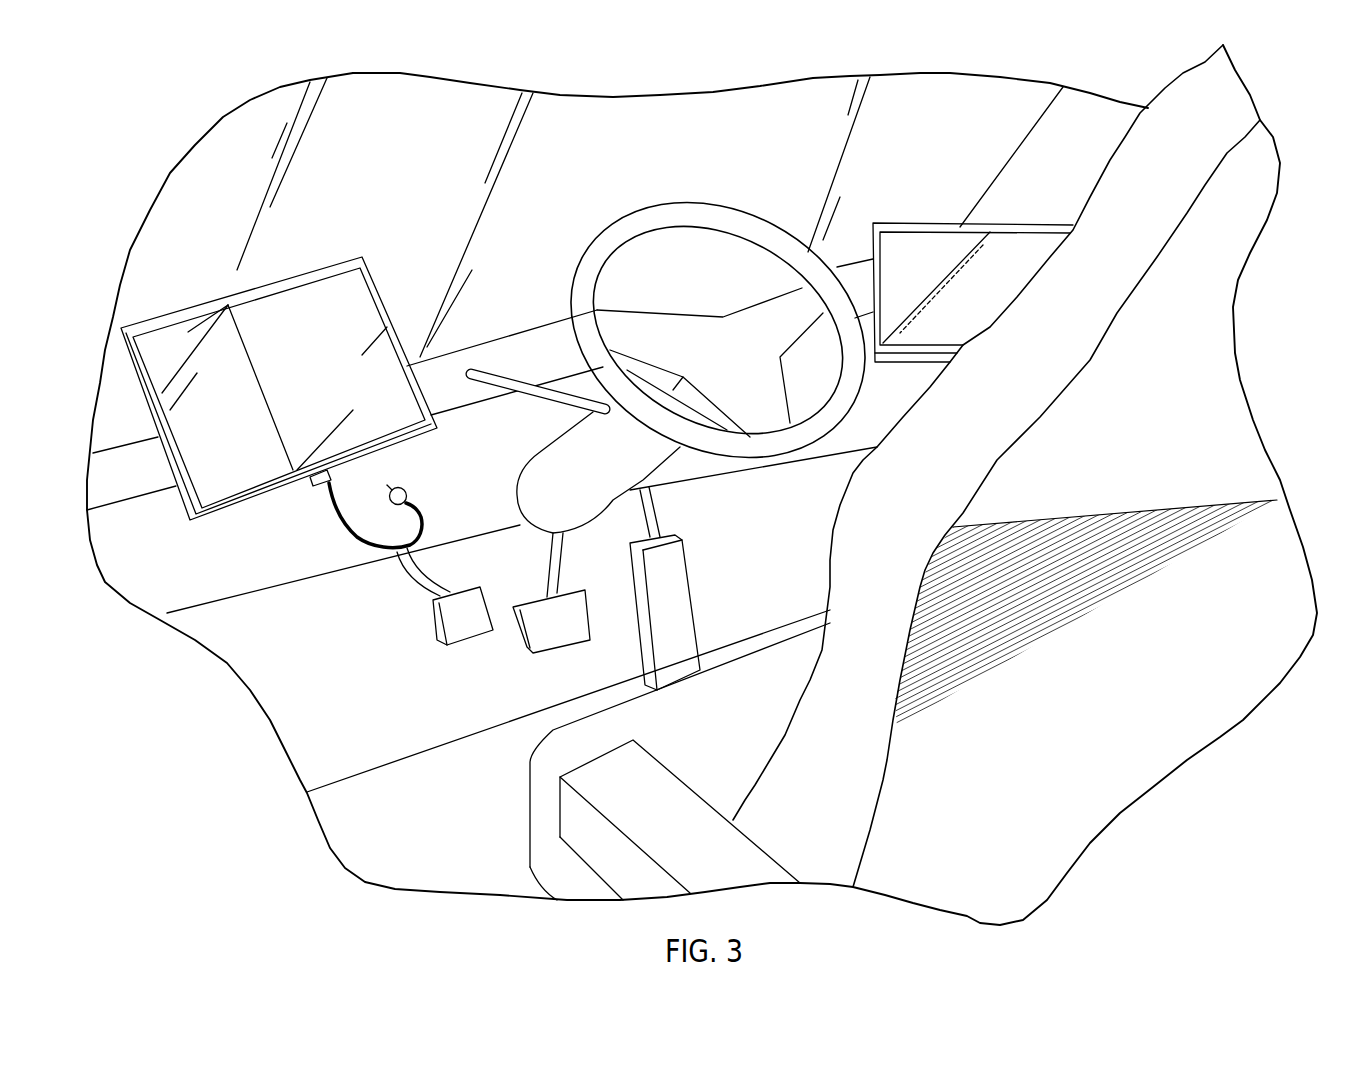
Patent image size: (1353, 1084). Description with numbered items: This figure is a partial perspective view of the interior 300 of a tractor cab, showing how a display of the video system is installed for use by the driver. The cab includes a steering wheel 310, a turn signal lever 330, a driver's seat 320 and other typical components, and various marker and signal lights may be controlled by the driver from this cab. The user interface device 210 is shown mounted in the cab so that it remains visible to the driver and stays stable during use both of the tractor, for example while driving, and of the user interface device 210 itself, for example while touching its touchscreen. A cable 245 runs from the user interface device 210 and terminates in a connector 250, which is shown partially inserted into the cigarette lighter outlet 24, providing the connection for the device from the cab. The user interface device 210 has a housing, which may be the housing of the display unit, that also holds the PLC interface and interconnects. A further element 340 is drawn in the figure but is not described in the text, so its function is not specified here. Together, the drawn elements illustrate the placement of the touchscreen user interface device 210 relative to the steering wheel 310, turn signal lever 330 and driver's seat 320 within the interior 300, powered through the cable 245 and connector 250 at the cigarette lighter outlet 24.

The interior 300 is at (210, 804).
The user interface device 210 is at (180, 310).
The cable 245 is at (326, 488).
The cigarette lighter outlet 24 is at (395, 483).
The connector 250 is at (411, 502).
The steering wheel 310 is at (720, 203).
The driver's seat 320 is at (1215, 309).
The turn signal lever 330 is at (497, 368).
The instrument panel display 340 is at (950, 222).